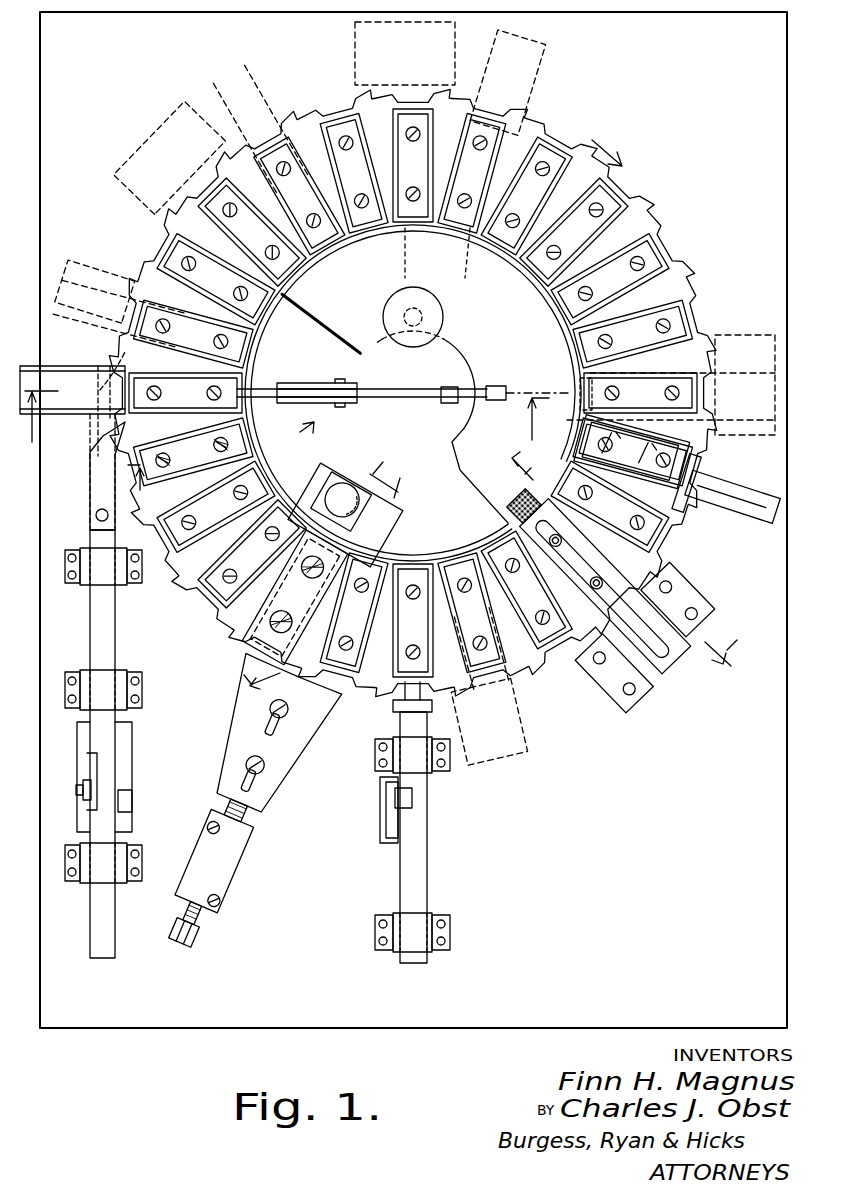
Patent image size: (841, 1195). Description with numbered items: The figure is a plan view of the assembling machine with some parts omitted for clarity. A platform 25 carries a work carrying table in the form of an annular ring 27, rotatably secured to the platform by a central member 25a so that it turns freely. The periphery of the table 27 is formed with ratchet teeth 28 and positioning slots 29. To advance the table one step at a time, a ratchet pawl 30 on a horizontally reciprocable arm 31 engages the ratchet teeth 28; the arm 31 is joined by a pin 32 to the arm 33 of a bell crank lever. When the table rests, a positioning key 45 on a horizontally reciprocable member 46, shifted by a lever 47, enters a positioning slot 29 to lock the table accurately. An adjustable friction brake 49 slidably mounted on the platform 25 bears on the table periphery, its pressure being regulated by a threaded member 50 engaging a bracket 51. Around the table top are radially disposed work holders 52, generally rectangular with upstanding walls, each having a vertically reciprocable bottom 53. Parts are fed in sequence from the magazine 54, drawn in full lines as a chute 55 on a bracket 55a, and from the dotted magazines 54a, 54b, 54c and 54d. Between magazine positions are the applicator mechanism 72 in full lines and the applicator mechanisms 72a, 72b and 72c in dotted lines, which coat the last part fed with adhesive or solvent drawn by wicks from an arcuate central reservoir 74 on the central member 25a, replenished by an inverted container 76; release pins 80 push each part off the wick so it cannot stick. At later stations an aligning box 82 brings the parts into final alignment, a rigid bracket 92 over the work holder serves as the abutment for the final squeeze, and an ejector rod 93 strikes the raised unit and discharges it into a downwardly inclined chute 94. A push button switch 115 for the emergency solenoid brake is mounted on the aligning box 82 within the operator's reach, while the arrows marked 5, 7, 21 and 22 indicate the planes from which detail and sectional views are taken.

The section line 5- 5 is at (633, 559).
The section line 7- 7 is at (284, 431).
The direction arrow 21 is at (333, 584).
The direction arrow 22 is at (221, 474).
The platform 25 is at (252, 1028).
The central member 25a is at (460, 472).
The work carrying table 27 is at (532, 672).
The ratchet teeth 28 is at (223, 153).
The positioning slots 29 is at (275, 122).
The ratchet pawl 30 is at (96, 450).
The horizontally reciprocable arm 31 is at (93, 637).
The pin 32 is at (130, 792).
The arm of bell crank lever 33 is at (128, 812).
The positioning key 45 is at (430, 708).
The horizontally reciprocable member 46 is at (418, 872).
The lever 47 is at (390, 826).
The adjustable friction brake 49 is at (261, 798).
The threaded member 50 is at (196, 926).
The bracket 51 is at (230, 866).
The work holders 52 is at (645, 225).
The vertically reciprocable bottom 53 is at (600, 210).
The magazine 54 is at (690, 442).
The magazine 54a is at (286, 335).
The magazine 54b is at (356, 245).
The magazine 54c is at (475, 230).
The magazine 54d is at (440, 566).
The chute 55 is at (635, 477).
The bracket 55a is at (724, 520).
The applicator mechanism 72 is at (655, 658).
The applicator mechanism 72a is at (310, 289).
The applicator mechanism 72b is at (405, 228).
The applicator mechanism 72c is at (578, 386).
The central reservoir 74 is at (473, 367).
The container 76 is at (415, 346).
The release pins 80 is at (556, 548).
The aligning box 82 is at (250, 611).
The rigid bracket 92 is at (252, 454).
The ejector rod 93 is at (302, 389).
The downwardly inclined chute 94 is at (67, 378).
The push button switch 115 is at (339, 493).